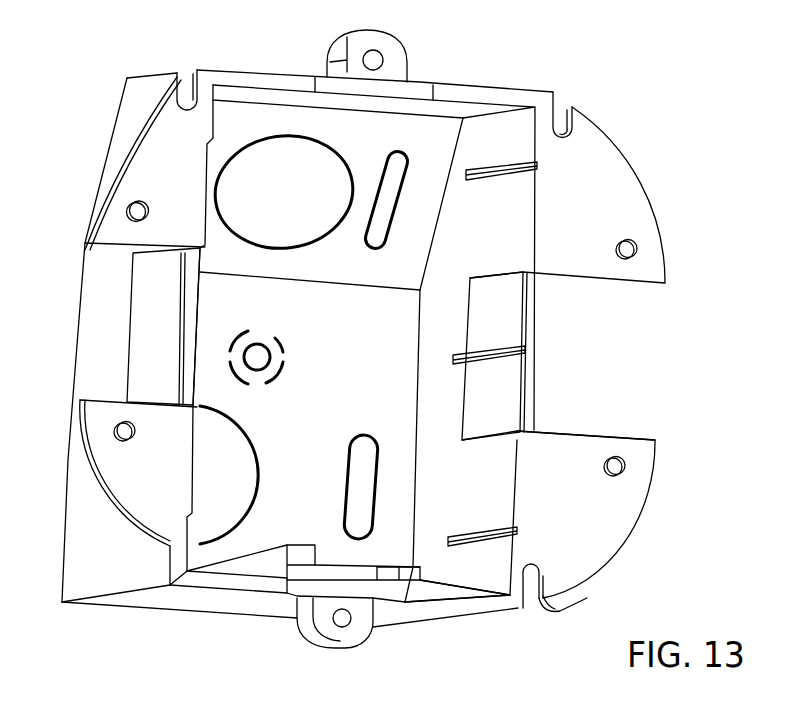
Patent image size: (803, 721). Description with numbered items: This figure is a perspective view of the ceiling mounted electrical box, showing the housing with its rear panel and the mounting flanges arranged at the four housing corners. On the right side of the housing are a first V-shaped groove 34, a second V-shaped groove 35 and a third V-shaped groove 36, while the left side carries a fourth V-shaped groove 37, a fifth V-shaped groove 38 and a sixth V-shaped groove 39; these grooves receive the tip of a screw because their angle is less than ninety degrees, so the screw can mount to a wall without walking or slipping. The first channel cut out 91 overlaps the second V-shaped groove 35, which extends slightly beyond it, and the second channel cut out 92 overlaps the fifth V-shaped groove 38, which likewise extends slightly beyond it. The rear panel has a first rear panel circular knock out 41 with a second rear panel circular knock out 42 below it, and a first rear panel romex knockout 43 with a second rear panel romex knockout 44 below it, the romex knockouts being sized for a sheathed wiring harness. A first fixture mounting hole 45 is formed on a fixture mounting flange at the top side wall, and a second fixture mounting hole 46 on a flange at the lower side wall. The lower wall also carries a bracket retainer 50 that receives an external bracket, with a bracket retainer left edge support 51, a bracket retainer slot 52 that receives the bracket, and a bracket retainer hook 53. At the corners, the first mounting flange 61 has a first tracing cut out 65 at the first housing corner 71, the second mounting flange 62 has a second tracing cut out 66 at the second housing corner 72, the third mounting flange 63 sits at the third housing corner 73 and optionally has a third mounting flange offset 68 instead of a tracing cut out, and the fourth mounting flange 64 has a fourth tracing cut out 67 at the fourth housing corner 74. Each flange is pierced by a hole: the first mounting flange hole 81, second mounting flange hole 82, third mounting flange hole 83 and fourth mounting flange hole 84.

The first V-shaped groove 34 is at (505, 170).
The second V-shaped groove 35 is at (492, 352).
The third V-shaped groove 36 is at (483, 537).
The fourth V-shaped groove 37 is at (202, 142).
The fifth V-shaped groove 38 is at (182, 327).
The sixth V-shaped groove 39 is at (185, 512).
The first rear panel circular knock out 41 is at (318, 165).
The second rear panel circular knock out 42 is at (243, 438).
The first rear panel romex knockout 43 is at (380, 227).
The second rear panel romex knockout 44 is at (363, 450).
The first fixture mounting hole 45 is at (390, 53).
The second fixture mounting hole 46 is at (347, 620).
The bracket retainer 50 is at (413, 563).
The bracket retainer left edge support 51 is at (300, 565).
The bracket retainer slot 52 is at (423, 580).
The bracket retainer hook 53 is at (340, 573).
The first mounting flange 61 is at (633, 197).
The second mounting flange 62 is at (597, 533).
The third mounting flange 63 is at (133, 493).
The fourth mounting flange 64 is at (137, 153).
The first tracing cut out 65 is at (560, 113).
The second tracing cut out 66 is at (545, 602).
The fourth tracing cut out 67 is at (188, 93).
The third mounting flange offset 68 is at (170, 562).
The first housing corner 71 is at (527, 100).
The second housing corner 72 is at (517, 613).
The third housing corner 73 is at (185, 580).
The fourth housing corner 74 is at (242, 80).
The first mounting flange hole 81 is at (628, 253).
The second mounting flange hole 82 is at (613, 460).
The third mounting flange hole 83 is at (118, 435).
The fourth mounting flange hole 84 is at (133, 210).
The first channel cut out 91 is at (498, 407).
The second channel cut out 92 is at (147, 295).